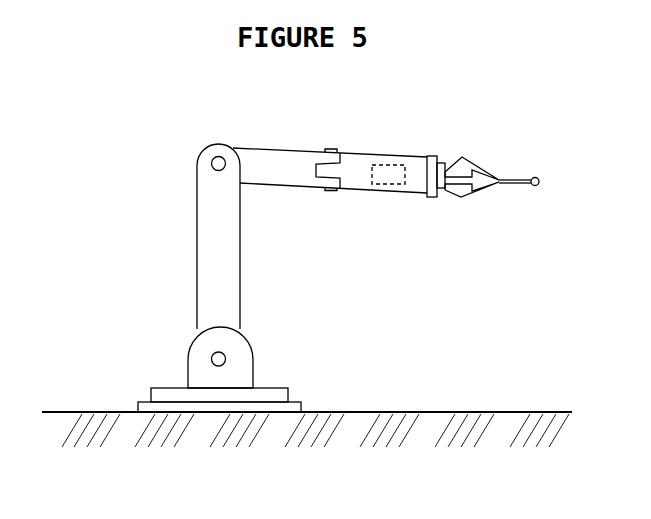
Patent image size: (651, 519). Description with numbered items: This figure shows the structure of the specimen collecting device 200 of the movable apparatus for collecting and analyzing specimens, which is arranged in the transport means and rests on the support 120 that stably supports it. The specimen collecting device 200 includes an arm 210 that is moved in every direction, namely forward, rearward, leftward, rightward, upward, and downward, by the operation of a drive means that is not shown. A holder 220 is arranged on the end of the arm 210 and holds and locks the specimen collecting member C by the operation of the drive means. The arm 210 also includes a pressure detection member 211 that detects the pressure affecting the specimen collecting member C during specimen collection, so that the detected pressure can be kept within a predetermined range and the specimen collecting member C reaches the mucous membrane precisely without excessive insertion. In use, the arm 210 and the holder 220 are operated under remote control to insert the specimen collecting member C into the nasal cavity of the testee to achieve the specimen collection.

The support 120 is at (414, 411).
The specimen collecting device 200 is at (290, 237).
The arm 210 is at (236, 242).
The pressure detection member 211 is at (387, 163).
The holder 220 is at (465, 158).
The specimen collecting member C is at (522, 222).